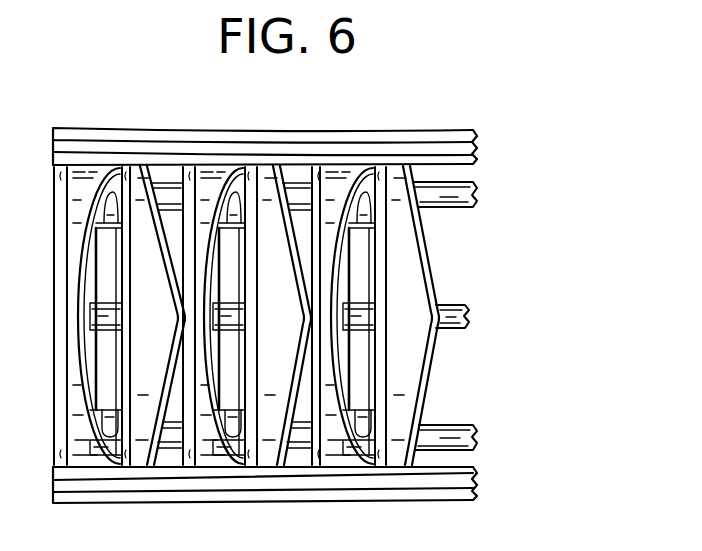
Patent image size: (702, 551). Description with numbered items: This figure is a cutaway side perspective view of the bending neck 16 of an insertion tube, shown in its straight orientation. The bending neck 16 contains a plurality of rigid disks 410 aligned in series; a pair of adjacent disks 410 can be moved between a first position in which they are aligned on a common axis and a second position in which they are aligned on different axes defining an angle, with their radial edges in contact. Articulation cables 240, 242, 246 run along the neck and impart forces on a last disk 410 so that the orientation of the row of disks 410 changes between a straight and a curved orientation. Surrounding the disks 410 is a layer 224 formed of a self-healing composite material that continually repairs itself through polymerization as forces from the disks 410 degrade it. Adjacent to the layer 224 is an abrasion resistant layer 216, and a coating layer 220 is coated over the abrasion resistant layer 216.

The bending neck 16 is at (206, 97).
The coating layer 220 is at (287, 132).
The abrasion resistant layer 216 is at (358, 150).
The layer 224 is at (418, 160).
The articulation cable 246 is at (455, 183).
The disk 410 is at (347, 247).
The articulation cable 240 is at (460, 304).
The articulation cable 242 is at (443, 424).